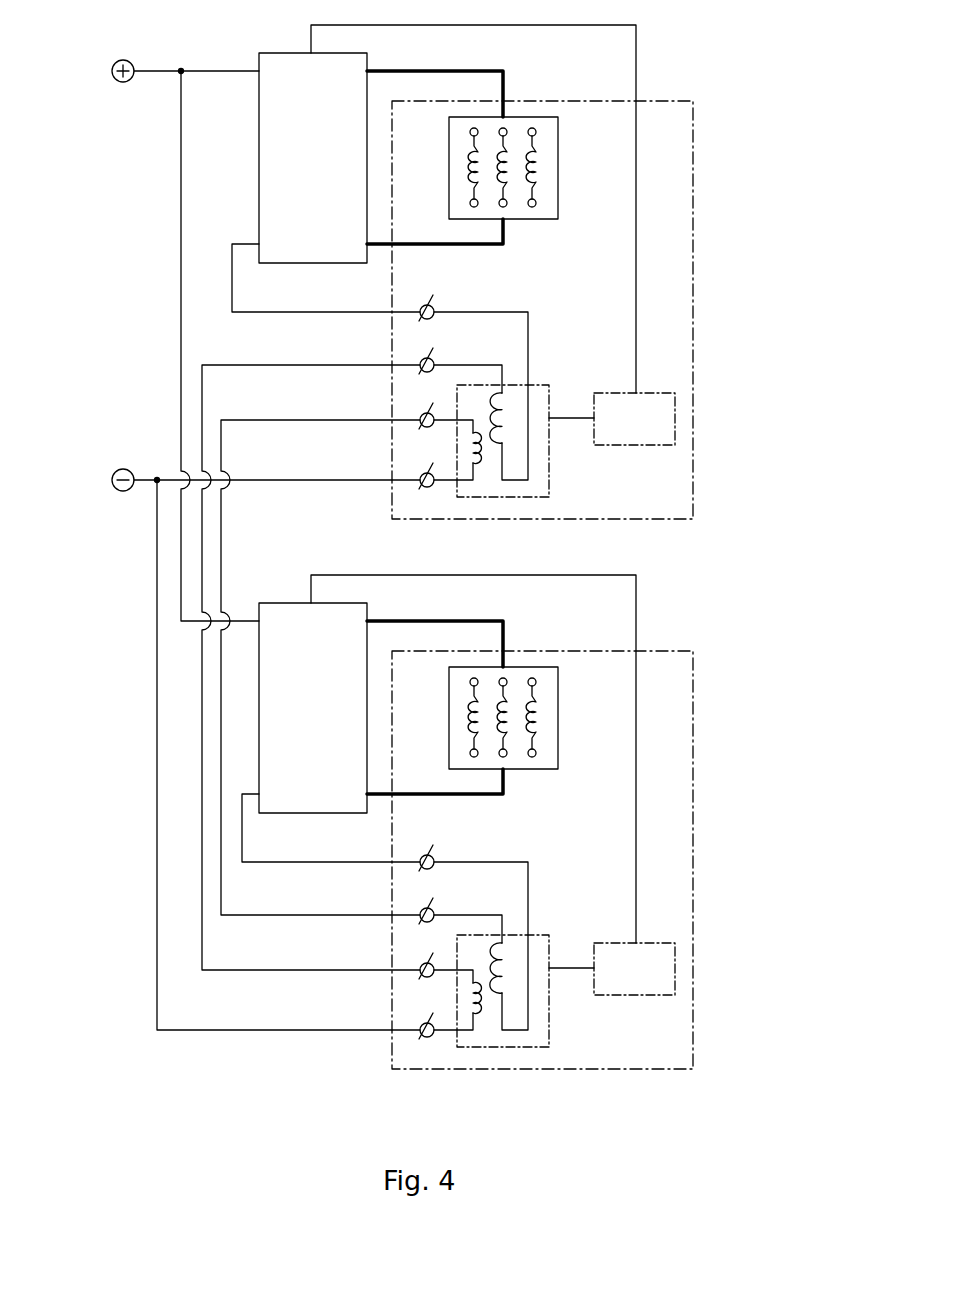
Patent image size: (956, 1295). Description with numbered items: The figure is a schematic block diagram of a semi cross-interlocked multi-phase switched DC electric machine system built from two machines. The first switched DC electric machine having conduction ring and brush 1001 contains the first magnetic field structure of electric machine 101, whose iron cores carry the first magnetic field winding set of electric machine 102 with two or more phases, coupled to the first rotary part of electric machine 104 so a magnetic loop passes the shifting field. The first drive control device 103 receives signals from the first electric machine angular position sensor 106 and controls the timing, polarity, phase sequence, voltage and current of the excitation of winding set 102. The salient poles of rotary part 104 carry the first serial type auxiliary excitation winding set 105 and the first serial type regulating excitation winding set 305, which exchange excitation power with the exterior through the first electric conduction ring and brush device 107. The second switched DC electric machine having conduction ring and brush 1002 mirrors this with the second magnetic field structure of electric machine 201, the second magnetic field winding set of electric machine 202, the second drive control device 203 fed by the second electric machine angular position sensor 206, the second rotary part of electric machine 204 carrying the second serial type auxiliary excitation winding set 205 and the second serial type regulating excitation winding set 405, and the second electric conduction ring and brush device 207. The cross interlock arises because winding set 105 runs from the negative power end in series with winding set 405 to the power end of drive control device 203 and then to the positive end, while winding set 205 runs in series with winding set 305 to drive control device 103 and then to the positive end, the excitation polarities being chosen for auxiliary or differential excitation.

The first magnetic field structure of electric machine 101 is at (558, 193).
The first magnetic field winding set of electric machine 102 is at (469, 168).
The first drive control device 103 is at (288, 52).
The first rotary part of electric machine 104 is at (550, 403).
The first serial type auxiliary excitation winding set 105 is at (482, 455).
The first electric machine angular position sensor 106 is at (617, 447).
The first electric conduction ring and brush device 107 is at (420, 321).
The first serial type regulating excitation winding set 305 is at (512, 437).
The first switched DC electric machine having conduction ring and brush 1001 is at (693, 160).
The second magnetic field structure of electric machine 201 is at (558, 743).
The second magnetic field winding set of electric machine 202 is at (469, 718).
The second drive control device 203 is at (275, 603).
The second rotary part of electric machine 204 is at (550, 953).
The second serial type auxiliary excitation winding set 205 is at (482, 1005).
The second electric machine angular position sensor 206 is at (617, 997).
The second electric conduction ring and brush device 207 is at (420, 871).
The second serial type regulating excitation winding set 405 is at (512, 987).
The second switched DC electric machine having conduction ring and brush 1002 is at (693, 710).